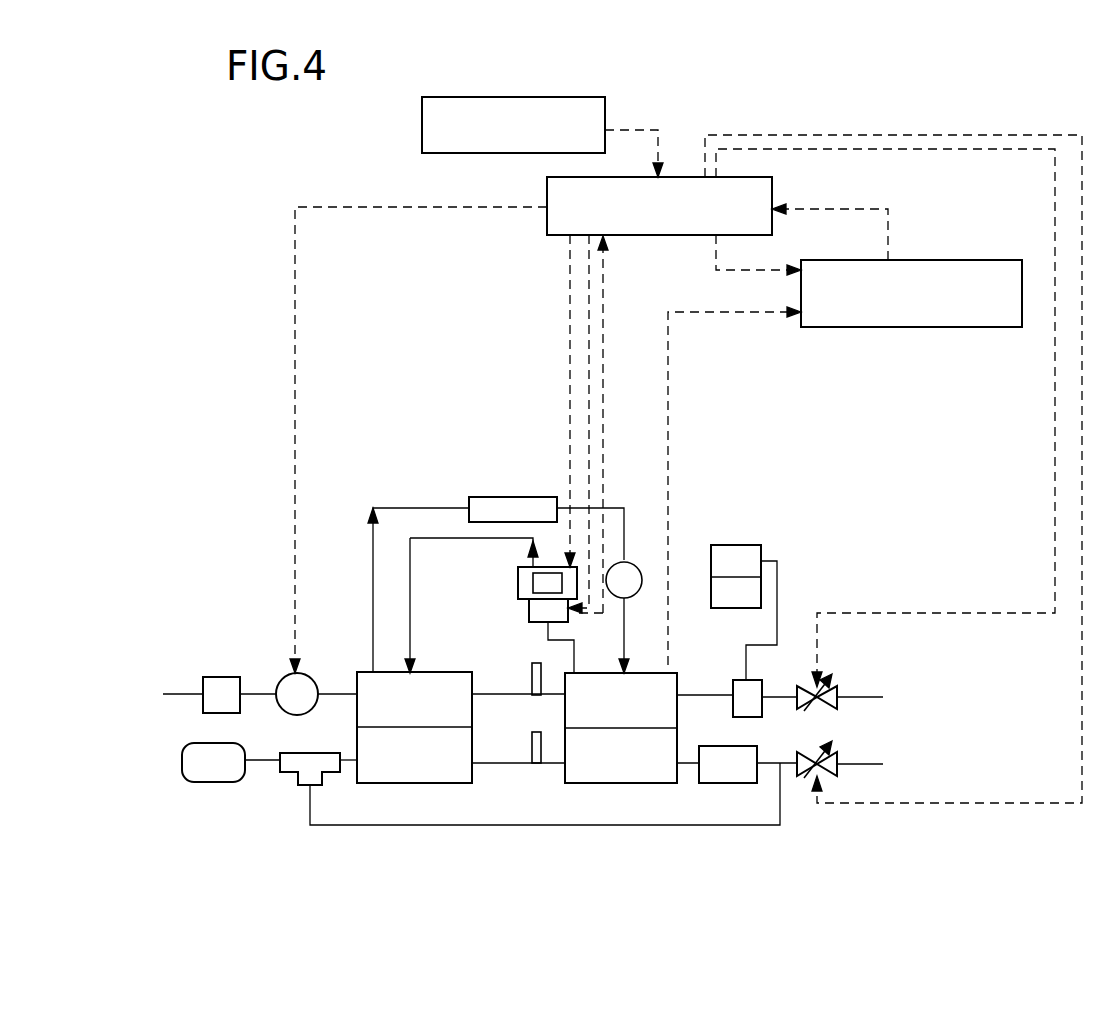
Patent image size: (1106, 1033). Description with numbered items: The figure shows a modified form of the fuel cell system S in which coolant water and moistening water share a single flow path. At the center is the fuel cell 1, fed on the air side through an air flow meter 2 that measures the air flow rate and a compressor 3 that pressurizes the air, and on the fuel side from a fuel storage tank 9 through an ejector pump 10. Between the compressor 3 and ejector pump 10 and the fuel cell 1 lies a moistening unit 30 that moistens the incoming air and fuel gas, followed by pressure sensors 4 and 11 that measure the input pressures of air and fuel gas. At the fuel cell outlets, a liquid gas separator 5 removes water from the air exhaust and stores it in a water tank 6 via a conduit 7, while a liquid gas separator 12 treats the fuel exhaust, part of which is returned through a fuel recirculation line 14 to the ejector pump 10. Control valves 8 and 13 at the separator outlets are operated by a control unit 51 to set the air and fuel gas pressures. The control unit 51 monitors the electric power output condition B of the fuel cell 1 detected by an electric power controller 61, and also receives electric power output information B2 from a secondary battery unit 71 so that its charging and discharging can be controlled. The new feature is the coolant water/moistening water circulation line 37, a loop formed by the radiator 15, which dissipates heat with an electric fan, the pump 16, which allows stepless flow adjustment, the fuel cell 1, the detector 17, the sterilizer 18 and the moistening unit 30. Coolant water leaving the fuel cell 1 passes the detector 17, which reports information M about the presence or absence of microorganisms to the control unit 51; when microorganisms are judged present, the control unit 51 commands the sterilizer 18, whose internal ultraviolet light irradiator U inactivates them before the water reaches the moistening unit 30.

The secondary battery unit 71 is at (557, 97).
The electric power output information B2 is at (634, 139).
The control unit 51 is at (670, 236).
The fuel cell system S is at (828, 108).
The electric power controller 61 is at (944, 260).
The electric power output condition B is at (791, 432).
The information related to presence or absence of microorganisms M is at (596, 424).
The coolant water/moistening water circulation line 37 is at (420, 508).
The radiator 15 is at (512, 497).
The pump 16 is at (624, 562).
The sterilizer 18 is at (518, 588).
The ultraviolet light irradiator U is at (533, 578).
The detector 17 is at (529, 612).
The air flow meter 2 is at (225, 677).
The compressor 3 is at (311, 677).
The moistening unit 30 is at (420, 783).
The fuel cell 1 is at (622, 783).
The pressure sensor 4 is at (532, 668).
The pressure sensor 11 is at (532, 740).
The liquid gas separator 5 is at (735, 680).
The water tank 6 is at (735, 545).
The conduit 7 is at (777, 590).
The control valve 8 is at (835, 686).
The control valve 13 is at (840, 772).
The liquid gas separator 12 is at (726, 783).
The fuel storage tank 9 is at (212, 782).
The ejector pump 10 is at (300, 785).
The fuel recirculation line 14 is at (522, 825).